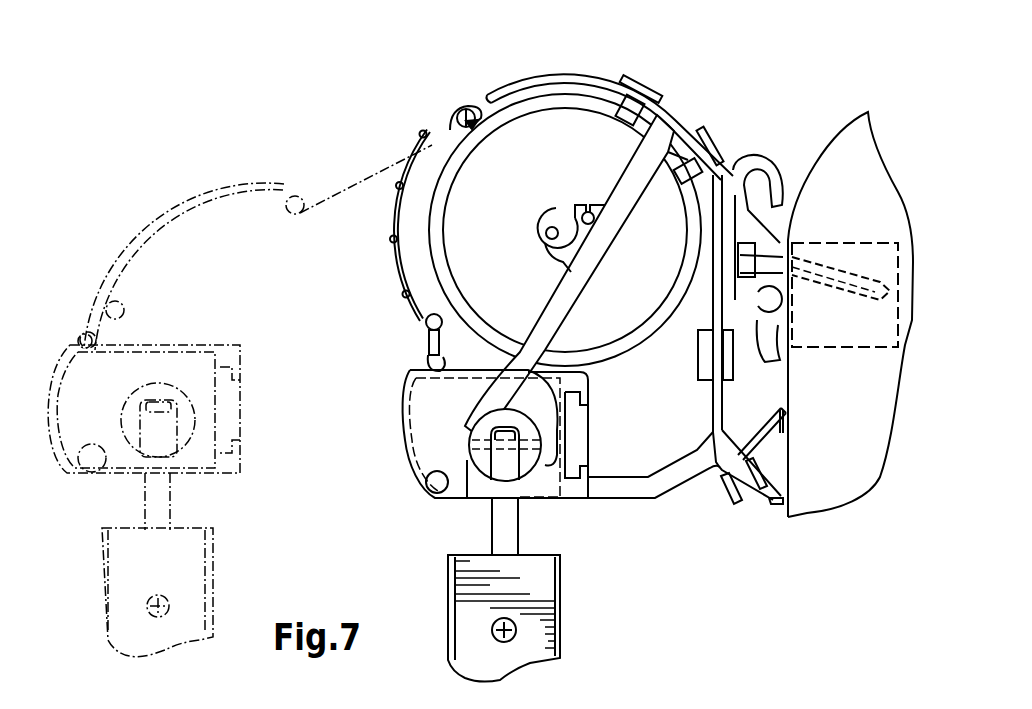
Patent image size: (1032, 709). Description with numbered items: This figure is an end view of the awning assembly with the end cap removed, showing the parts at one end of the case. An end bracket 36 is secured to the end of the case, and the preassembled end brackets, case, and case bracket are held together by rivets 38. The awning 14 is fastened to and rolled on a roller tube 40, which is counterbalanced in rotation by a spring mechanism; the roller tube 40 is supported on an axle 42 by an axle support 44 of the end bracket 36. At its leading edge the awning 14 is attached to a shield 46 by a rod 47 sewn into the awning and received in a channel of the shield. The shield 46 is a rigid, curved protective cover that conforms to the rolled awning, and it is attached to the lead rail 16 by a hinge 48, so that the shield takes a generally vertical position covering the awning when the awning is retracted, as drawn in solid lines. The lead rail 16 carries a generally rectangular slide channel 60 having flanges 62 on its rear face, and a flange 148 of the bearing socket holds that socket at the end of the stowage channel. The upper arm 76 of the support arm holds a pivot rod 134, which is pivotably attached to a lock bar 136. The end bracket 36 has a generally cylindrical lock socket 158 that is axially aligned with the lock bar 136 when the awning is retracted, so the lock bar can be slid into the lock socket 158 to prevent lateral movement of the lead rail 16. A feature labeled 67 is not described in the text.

The awning 14 is at (478, 108).
The lead rail 16 is at (424, 360).
The end bracket 36 is at (644, 500).
The rivets 38 is at (655, 92).
The roller tube 40 is at (564, 107).
The axle 42 is at (563, 222).
The axle support 44 is at (548, 231).
The shield 46 is at (434, 128).
The rod 47 is at (466, 110).
The hinge 48 is at (426, 332).
The slide channel 60 is at (605, 431).
The flanges 62 is at (590, 402).
The housing flange 67 is at (598, 477).
The upper arm 76 is at (560, 650).
The pivot rod 134 is at (490, 526).
The lock bar 136 is at (465, 432).
The flange 148 is at (405, 395).
The lock socket 158 is at (480, 417).